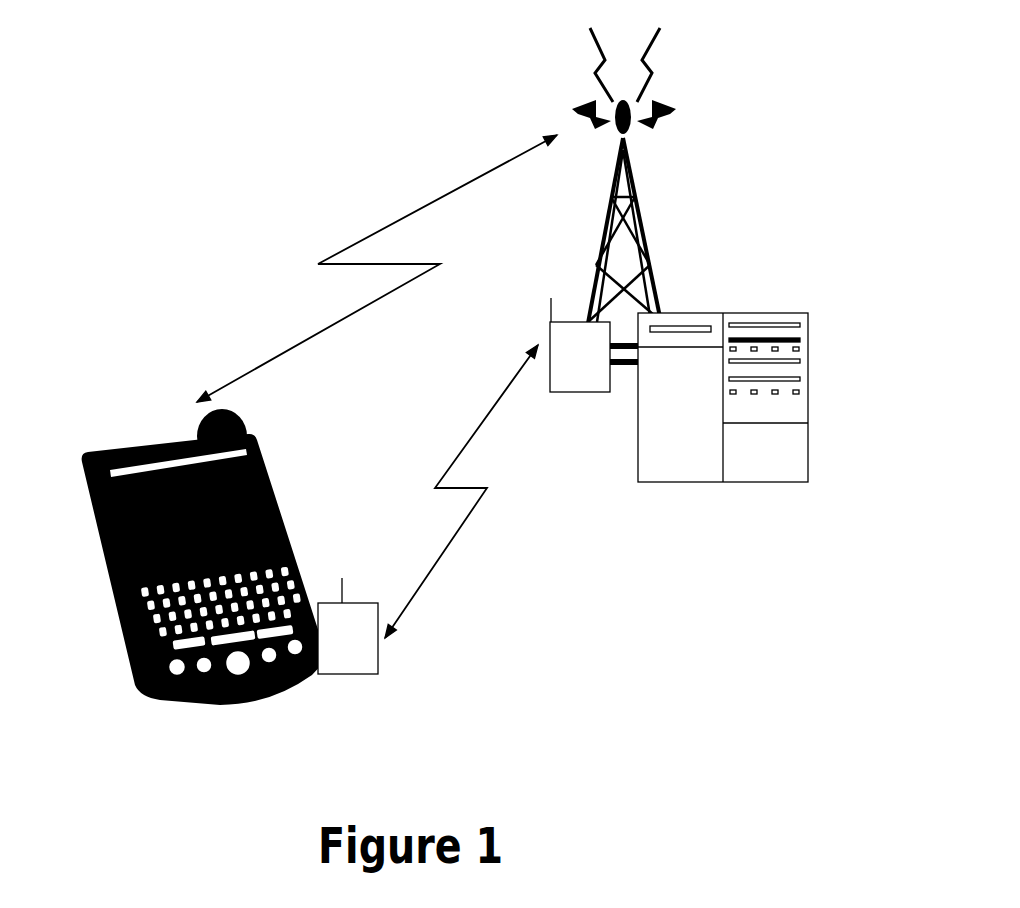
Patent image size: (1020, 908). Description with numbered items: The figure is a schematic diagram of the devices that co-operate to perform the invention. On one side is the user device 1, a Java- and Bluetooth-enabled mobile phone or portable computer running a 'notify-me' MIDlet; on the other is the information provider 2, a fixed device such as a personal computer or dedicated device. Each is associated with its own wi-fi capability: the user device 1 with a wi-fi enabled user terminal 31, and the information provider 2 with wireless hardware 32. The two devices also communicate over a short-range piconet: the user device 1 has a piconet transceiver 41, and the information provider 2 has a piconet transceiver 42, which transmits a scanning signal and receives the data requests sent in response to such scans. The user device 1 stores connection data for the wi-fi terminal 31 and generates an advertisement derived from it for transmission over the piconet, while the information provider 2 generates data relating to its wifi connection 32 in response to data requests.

The user device 1 is at (190, 557).
The information provider 2 is at (723, 367).
The wi-fi enabled user terminal 31 is at (347, 277).
The wireless hardware 32 is at (643, 175).
The piconet transceiver 41 is at (348, 659).
The piconet transceiver 42 is at (571, 345).